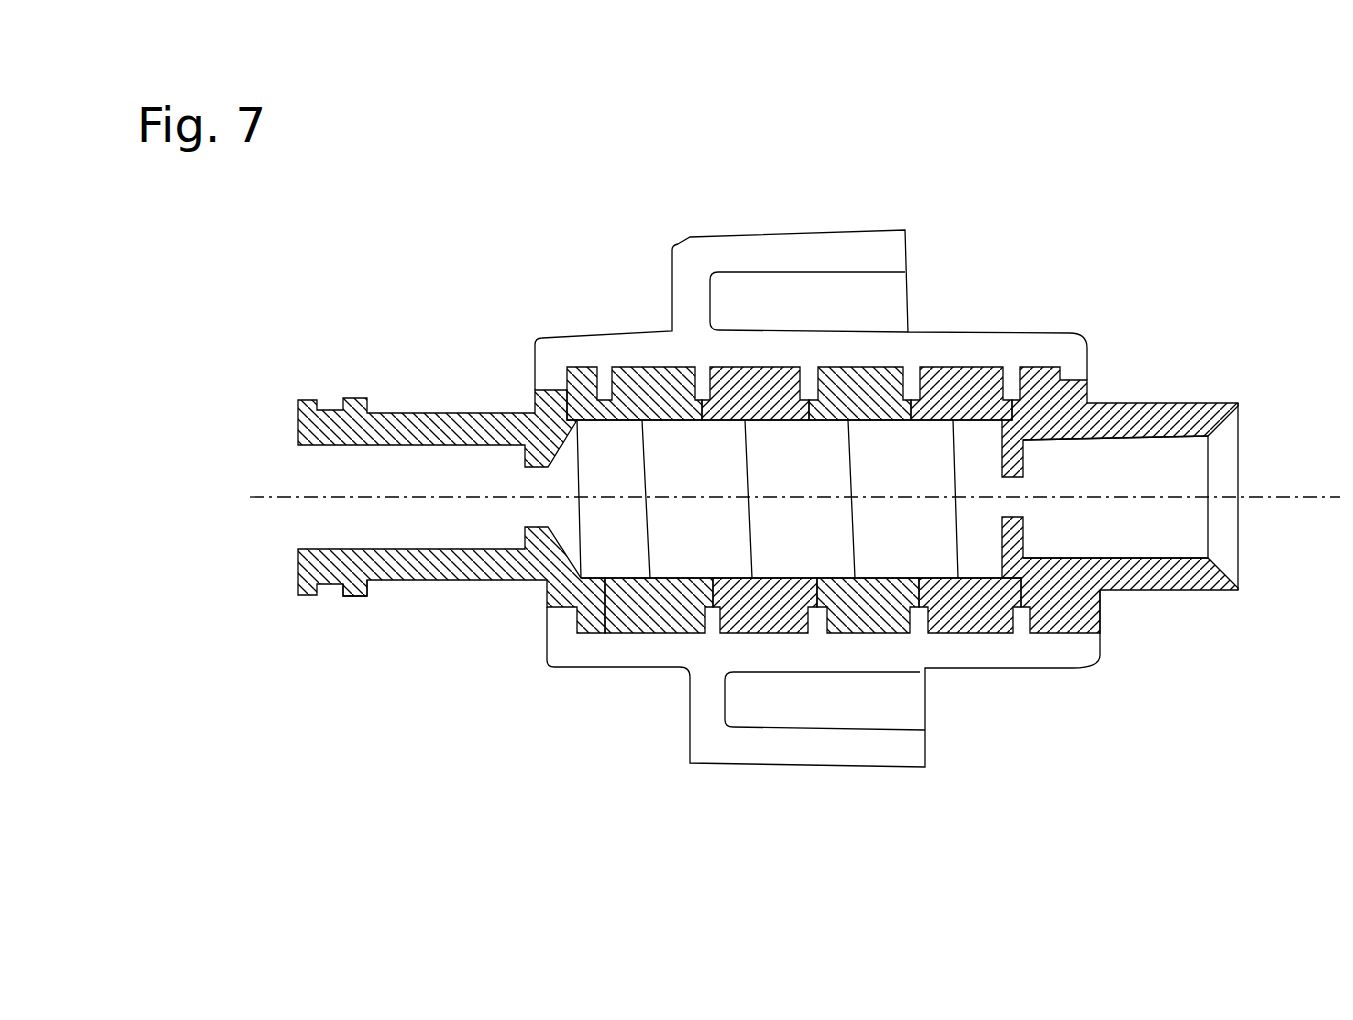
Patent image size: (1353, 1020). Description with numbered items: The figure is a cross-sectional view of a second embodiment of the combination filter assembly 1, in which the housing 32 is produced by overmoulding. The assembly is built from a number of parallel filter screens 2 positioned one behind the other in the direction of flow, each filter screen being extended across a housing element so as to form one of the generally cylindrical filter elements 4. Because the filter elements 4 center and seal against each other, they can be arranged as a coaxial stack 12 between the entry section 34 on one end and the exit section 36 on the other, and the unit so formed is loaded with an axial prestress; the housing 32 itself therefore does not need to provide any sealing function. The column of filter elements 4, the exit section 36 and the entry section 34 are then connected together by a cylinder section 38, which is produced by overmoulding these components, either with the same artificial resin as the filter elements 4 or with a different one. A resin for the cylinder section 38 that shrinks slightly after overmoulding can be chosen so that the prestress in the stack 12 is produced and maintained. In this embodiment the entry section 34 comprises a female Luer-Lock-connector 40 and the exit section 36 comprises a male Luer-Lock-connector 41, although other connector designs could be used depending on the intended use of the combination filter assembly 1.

The combination filter assembly 1 is at (540, 330).
The filter screens 2 is at (747, 475).
The filter elements 4 is at (970, 370).
The stack 12 is at (778, 633).
The housing 32 is at (575, 673).
The entry section 34 is at (298, 418).
The exit section 36 is at (1140, 403).
The cylinder section 38 is at (937, 352).
The female Luer-Lock-connector 40 is at (350, 596).
The male Luer-Lock-connector 41 is at (1175, 588).